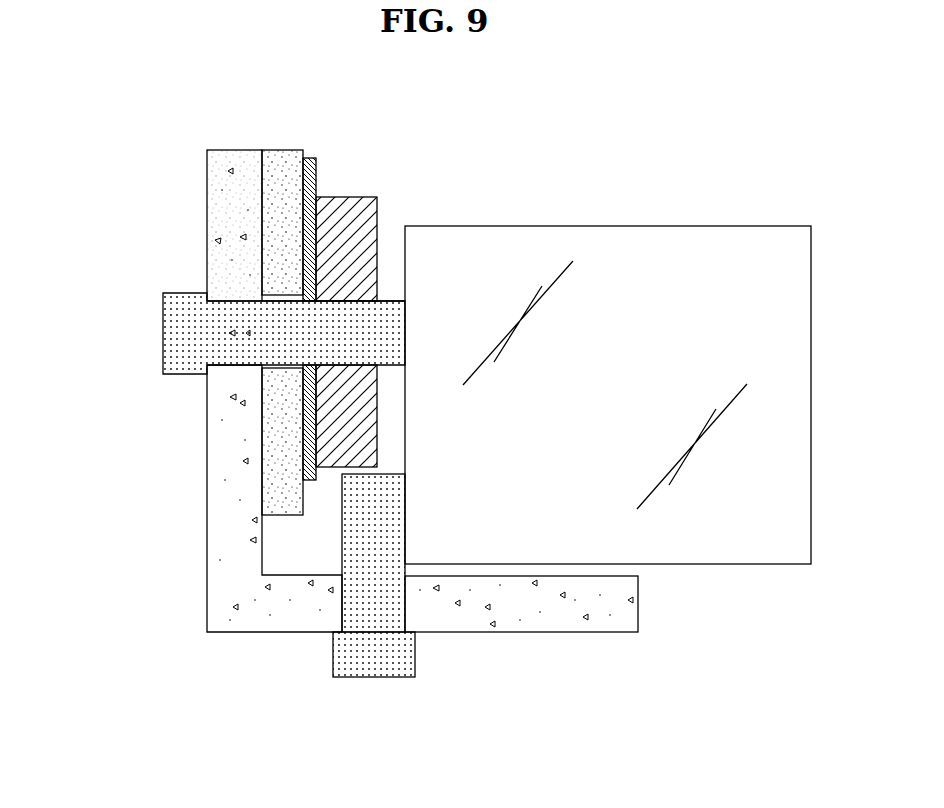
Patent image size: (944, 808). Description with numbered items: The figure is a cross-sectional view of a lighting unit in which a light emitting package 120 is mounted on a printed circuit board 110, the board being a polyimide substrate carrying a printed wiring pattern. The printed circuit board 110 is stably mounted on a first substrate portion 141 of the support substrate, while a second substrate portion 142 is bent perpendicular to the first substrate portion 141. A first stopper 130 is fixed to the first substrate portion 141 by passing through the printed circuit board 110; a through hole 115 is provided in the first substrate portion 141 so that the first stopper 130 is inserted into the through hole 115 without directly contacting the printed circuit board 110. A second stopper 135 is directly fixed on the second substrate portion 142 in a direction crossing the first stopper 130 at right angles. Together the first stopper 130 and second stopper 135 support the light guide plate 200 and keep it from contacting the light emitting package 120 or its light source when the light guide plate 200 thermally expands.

The printed circuit board 110 is at (280, 160).
The through hole 115 is at (258, 288).
The light emitting package 120 is at (347, 207).
The first stopper 130 is at (153, 323).
The second stopper 135 is at (322, 652).
The first substrate portion 141 is at (222, 486).
The second substrate portion 142 is at (628, 605).
The light guide plate 200 is at (605, 238).